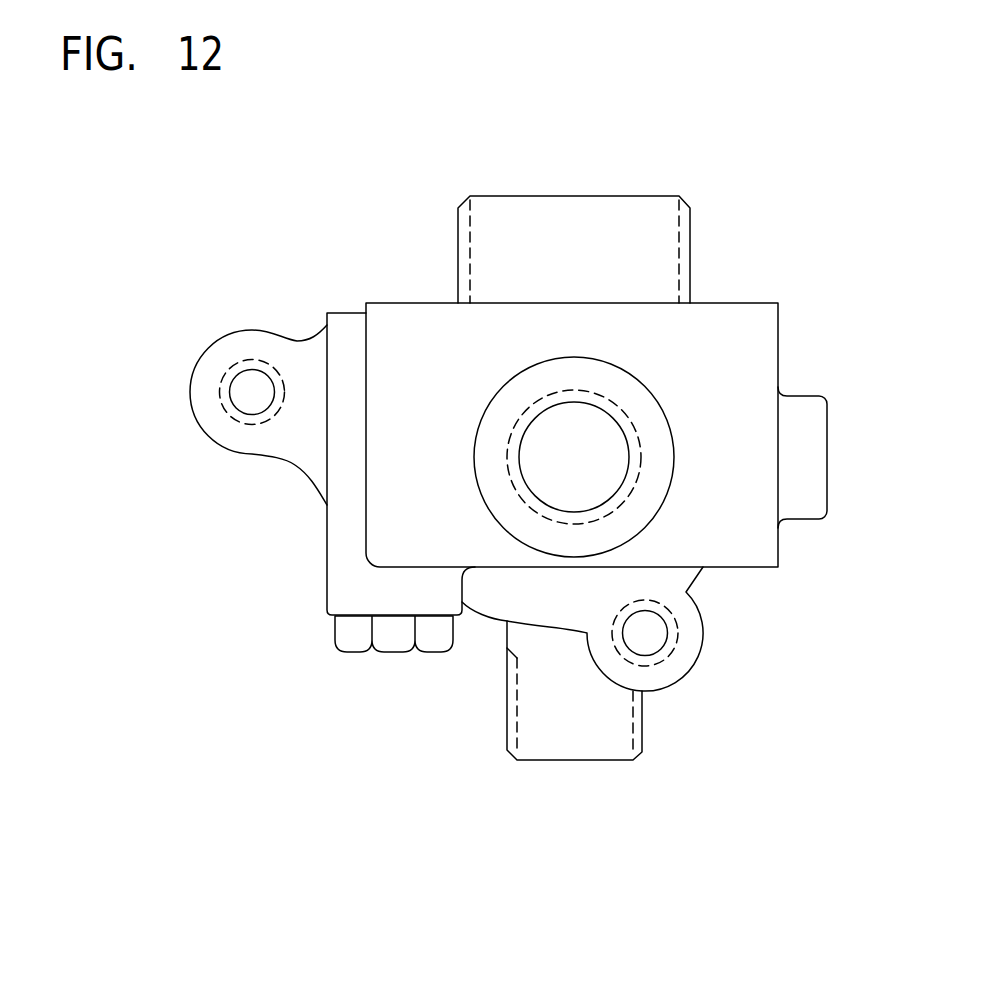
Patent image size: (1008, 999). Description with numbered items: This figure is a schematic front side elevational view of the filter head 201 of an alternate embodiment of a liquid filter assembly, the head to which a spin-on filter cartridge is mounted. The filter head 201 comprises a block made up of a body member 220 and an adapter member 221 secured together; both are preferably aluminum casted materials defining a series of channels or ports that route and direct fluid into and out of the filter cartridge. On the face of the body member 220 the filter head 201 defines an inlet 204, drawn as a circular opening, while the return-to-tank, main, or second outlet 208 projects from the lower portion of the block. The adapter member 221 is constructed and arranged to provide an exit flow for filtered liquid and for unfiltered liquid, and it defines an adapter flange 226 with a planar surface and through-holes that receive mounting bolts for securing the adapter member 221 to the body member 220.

The filter head 201 is at (283, 215).
The body member 220 is at (763, 335).
The inlet 204 is at (624, 469).
The adapter flange 226 is at (243, 328).
The adapter member 221 is at (278, 448).
The second outlet 208 is at (515, 740).